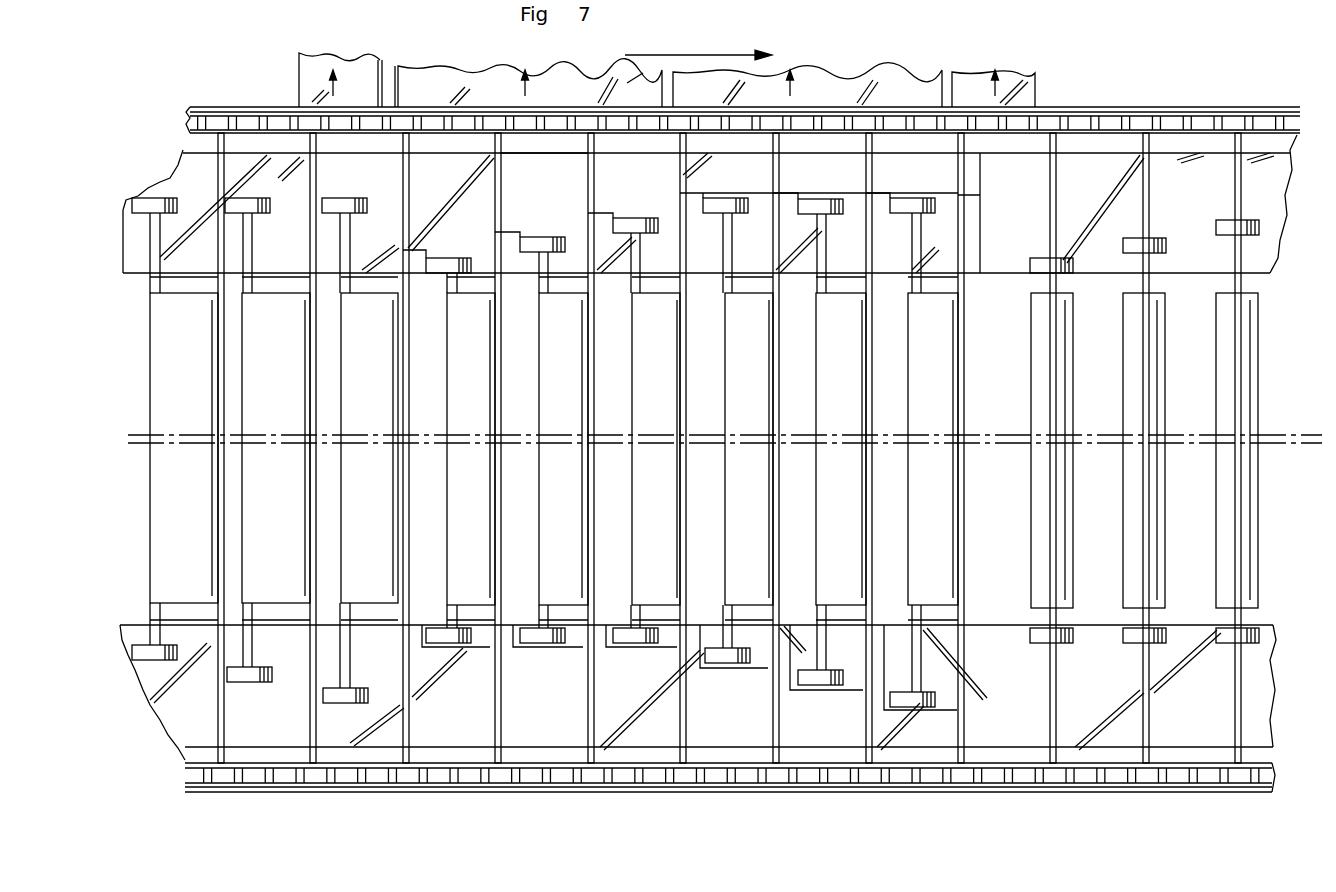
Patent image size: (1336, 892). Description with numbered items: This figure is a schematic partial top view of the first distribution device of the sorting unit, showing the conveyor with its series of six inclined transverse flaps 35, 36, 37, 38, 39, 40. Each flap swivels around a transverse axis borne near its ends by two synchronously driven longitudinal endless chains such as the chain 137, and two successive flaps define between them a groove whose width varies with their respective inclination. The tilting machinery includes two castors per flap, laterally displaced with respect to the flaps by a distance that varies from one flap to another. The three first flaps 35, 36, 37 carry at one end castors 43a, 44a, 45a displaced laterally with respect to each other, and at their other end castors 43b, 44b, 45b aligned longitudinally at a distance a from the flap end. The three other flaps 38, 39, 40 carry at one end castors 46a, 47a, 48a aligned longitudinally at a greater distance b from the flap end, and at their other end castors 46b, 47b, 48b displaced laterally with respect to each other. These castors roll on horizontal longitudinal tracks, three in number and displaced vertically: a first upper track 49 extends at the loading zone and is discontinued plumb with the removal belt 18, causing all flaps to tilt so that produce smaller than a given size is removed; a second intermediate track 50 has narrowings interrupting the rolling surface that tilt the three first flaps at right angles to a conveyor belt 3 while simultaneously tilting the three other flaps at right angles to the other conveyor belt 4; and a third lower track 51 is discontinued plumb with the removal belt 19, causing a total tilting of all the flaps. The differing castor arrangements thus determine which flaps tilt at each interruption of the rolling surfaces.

The conveyor belt 3 is at (450, 80).
The other conveyor belt 4 is at (843, 90).
The removal belt 18 is at (342, 75).
The removal belt 19 is at (972, 73).
The transverse flap 35 is at (484, 493).
The transverse flap 36 is at (581, 493).
The transverse flap 37 is at (673, 493).
The transverse flap 38 is at (766, 493).
The transverse flap 39 is at (858, 493).
The transverse flap 40 is at (950, 493).
The castor 43a is at (452, 262).
The castor 44a is at (537, 246).
The castor 45a is at (628, 226).
The castor 46a is at (720, 207).
The castor 47a is at (825, 207).
The castor 48a is at (908, 206).
The castor 43b is at (440, 644).
The castor 44b is at (530, 644).
The castor 45b is at (628, 644).
The castor 46b is at (718, 664).
The castor 47b is at (815, 686).
The castor 48b is at (914, 708).
The first upper track 49 is at (187, 180).
The second intermediate track 50 is at (563, 160).
The third lower track 51 is at (980, 205).
The longitudinal endless chain 137 is at (972, 793).